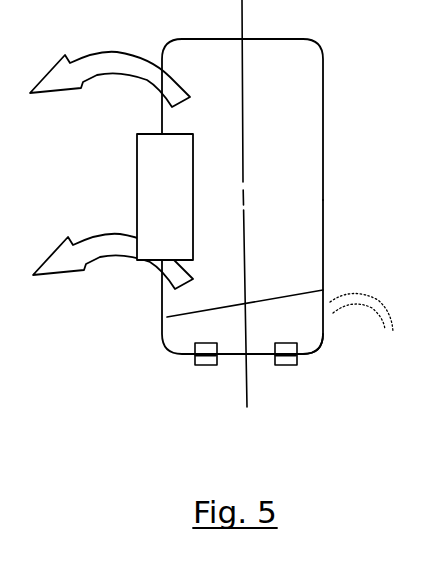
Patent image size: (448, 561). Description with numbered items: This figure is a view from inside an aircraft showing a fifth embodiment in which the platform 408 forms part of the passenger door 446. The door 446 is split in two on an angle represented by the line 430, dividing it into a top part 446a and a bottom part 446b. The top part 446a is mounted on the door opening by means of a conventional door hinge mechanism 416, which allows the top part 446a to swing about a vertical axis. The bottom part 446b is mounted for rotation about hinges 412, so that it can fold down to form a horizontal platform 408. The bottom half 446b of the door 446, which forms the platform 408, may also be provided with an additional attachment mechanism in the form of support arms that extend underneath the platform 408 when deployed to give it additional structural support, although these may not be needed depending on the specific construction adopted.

The door 446 is at (247, 204).
The top part of the door 446a is at (292, 82).
The bottom part of the door 446b is at (175, 328).
The door hinge mechanism 416 is at (147, 187).
The line 430 is at (292, 288).
The platform 408 is at (313, 338).
The hinges 412 is at (205, 364).